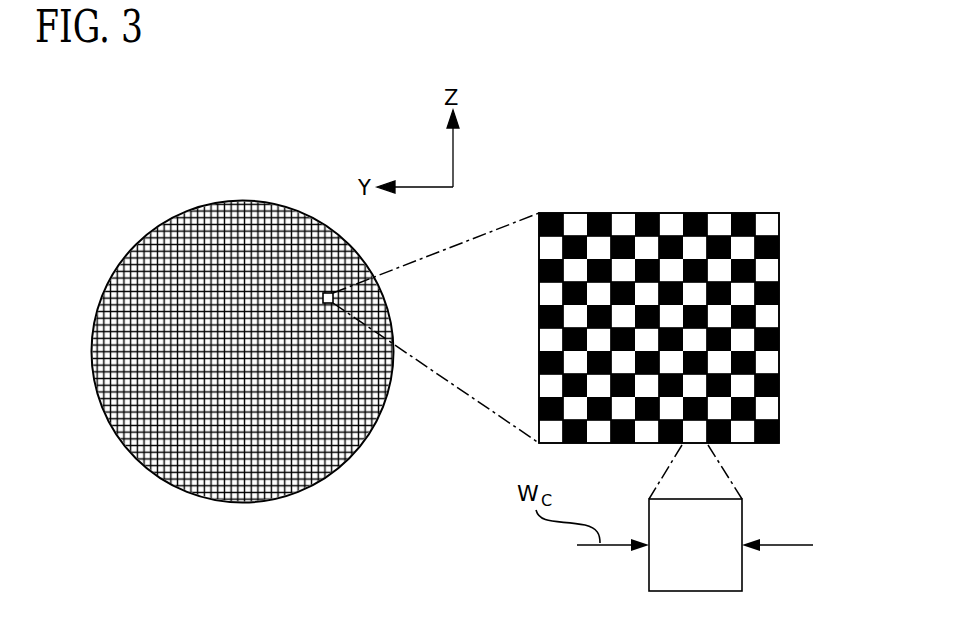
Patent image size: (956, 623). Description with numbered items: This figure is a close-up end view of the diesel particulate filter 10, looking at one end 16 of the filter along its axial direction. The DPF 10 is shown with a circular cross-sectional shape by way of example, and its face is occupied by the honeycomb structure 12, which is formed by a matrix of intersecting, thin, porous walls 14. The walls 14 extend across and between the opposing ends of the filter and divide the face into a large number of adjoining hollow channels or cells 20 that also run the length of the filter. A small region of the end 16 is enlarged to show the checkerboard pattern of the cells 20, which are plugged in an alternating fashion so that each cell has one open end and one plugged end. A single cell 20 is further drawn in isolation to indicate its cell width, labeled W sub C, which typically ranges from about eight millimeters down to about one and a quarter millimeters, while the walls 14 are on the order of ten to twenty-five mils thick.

The diesel particulate filter 10 is at (150, 196).
The honeycomb structure 12 is at (100, 252).
The porous walls 14 is at (720, 217).
The end 16 is at (178, 445).
The cells 20 is at (573, 217).